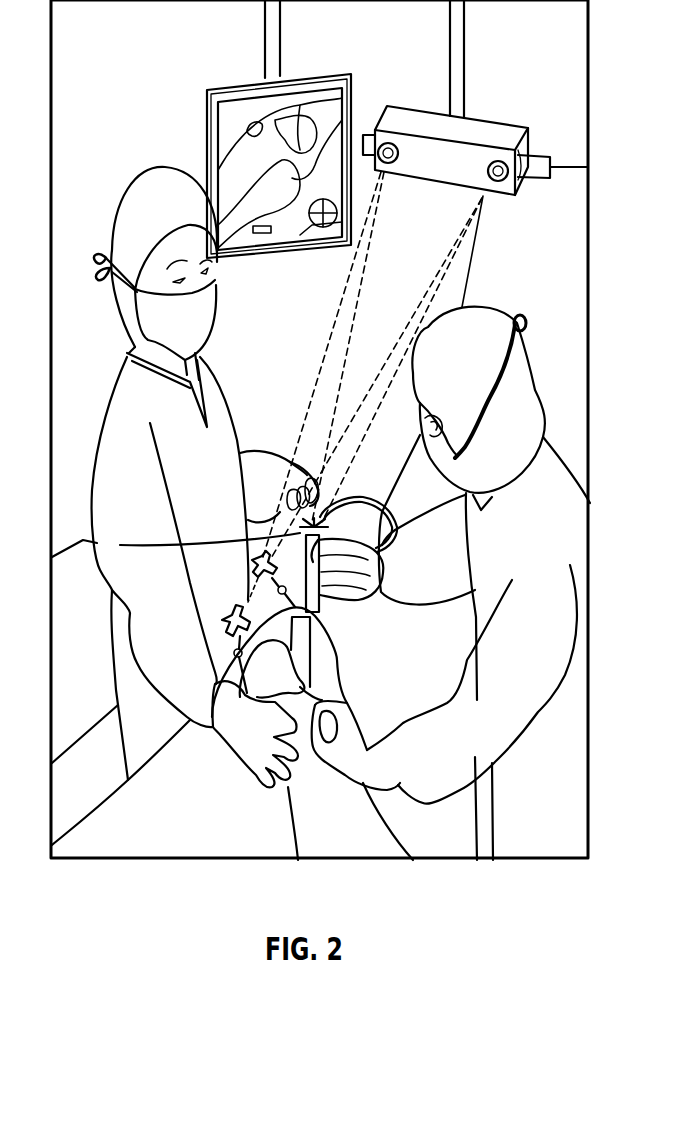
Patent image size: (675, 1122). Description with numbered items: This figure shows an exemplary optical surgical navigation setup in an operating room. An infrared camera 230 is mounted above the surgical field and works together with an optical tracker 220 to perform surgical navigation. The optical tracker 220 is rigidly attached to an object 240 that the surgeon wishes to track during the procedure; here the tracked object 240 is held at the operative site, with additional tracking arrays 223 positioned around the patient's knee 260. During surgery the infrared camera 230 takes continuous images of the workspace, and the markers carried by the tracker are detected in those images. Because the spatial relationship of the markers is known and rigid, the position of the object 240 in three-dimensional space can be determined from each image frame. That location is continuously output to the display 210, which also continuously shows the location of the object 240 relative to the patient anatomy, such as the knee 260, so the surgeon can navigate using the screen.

The display 210 is at (228, 88).
The infrared camera 230 is at (492, 130).
The optical tracker 220 is at (383, 560).
The tracker arrays 223 is at (262, 625).
The object 240 is at (322, 596).
The patient knee 260 is at (285, 672).